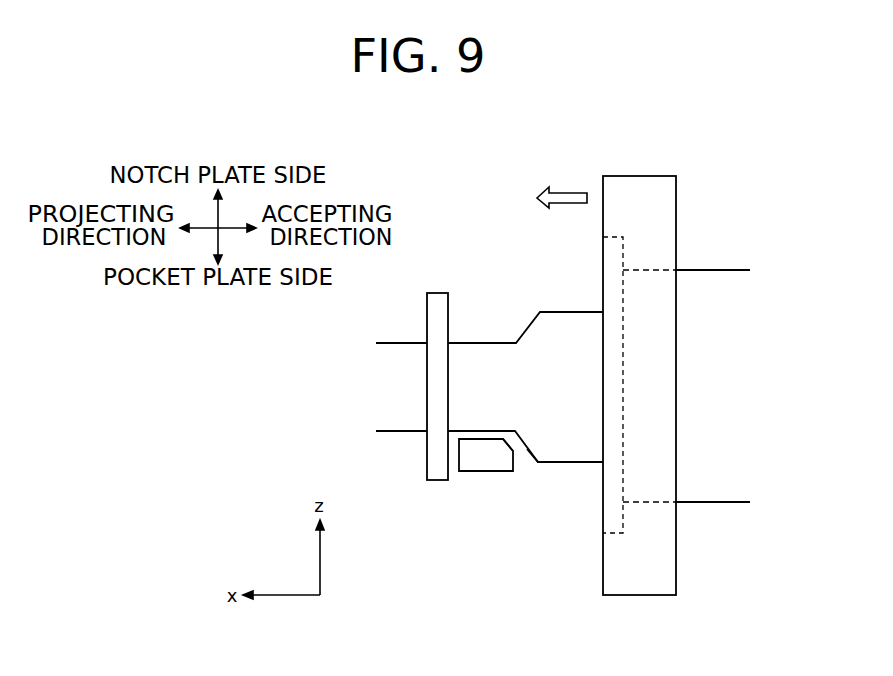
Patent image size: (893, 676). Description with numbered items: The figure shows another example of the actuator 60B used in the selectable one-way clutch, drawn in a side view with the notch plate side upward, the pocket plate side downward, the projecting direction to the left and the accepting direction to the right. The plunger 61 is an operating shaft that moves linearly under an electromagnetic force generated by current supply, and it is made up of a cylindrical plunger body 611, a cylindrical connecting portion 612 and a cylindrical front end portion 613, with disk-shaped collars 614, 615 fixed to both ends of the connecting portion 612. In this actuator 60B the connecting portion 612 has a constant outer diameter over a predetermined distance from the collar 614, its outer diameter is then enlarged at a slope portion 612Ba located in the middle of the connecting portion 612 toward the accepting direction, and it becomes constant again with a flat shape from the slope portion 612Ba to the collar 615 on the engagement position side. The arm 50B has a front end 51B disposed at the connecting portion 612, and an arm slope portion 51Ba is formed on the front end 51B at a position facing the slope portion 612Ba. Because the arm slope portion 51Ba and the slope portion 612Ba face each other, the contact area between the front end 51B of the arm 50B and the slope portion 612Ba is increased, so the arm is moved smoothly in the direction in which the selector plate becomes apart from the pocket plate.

The actuator 60B is at (713, 180).
The plunger body 611 is at (715, 269).
The connecting portion 612 is at (492, 342).
The slope portion 612Ba is at (531, 456).
The front end portion 613 is at (403, 342).
The collar 614 is at (438, 292).
The collar 615 is at (623, 517).
The plunger 61 is at (579, 372).
The arm 50B is at (516, 503).
The front end of arm 51B is at (485, 472).
The arm slope portion 51Ba is at (505, 441).